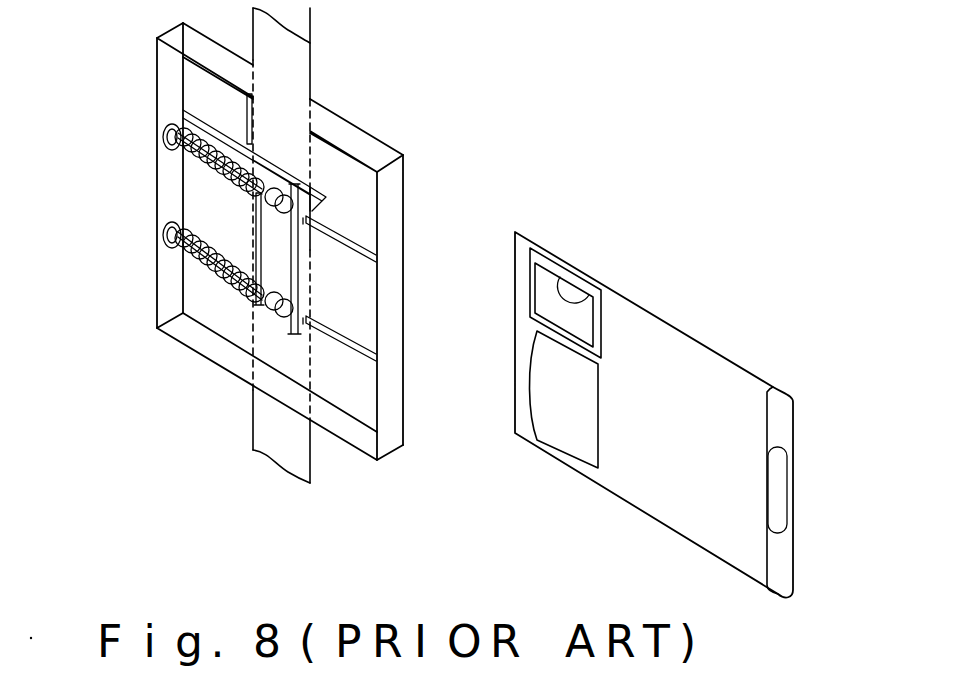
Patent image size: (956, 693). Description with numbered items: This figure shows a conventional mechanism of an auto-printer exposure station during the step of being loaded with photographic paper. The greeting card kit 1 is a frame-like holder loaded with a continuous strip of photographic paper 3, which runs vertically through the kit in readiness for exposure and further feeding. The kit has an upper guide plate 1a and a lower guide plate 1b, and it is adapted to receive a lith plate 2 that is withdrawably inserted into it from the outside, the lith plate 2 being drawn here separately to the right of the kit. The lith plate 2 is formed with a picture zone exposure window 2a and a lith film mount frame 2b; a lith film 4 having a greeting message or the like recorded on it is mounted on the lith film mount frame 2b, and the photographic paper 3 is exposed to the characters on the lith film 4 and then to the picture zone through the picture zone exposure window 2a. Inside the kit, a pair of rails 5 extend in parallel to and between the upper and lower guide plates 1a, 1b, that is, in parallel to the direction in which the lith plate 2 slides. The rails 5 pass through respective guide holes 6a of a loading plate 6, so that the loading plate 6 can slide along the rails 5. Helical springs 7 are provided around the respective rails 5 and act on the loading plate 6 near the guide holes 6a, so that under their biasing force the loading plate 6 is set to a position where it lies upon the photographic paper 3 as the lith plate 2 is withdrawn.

The greeting card kit 1 is at (389, 128).
The upper guide plate 1a is at (200, 92).
The lower guide plate 1b is at (200, 292).
The lith plate 2 is at (678, 360).
The picture zone exposure window 2a is at (563, 428).
The lith film mount frame 2b is at (583, 290).
The photographic paper 3 is at (300, 61).
The lith film 4 is at (553, 298).
The rails 5 is at (310, 218).
The loading plate 6 is at (247, 230).
The guide holes 6a is at (276, 166).
The helical springs 7 is at (180, 172).